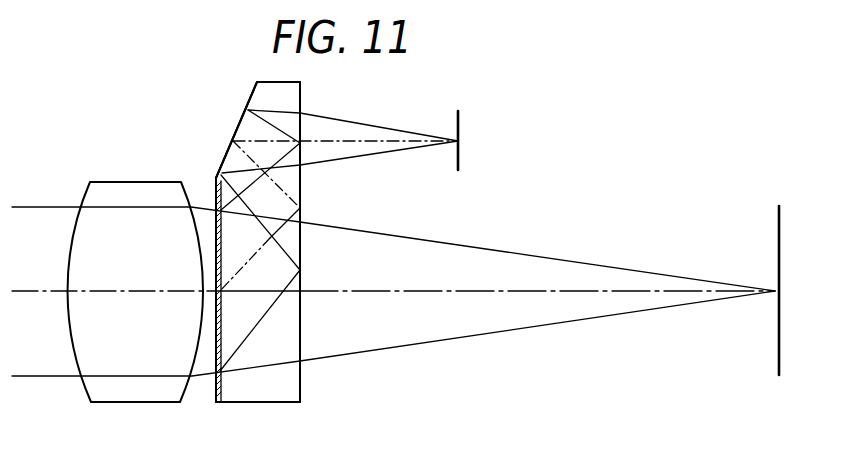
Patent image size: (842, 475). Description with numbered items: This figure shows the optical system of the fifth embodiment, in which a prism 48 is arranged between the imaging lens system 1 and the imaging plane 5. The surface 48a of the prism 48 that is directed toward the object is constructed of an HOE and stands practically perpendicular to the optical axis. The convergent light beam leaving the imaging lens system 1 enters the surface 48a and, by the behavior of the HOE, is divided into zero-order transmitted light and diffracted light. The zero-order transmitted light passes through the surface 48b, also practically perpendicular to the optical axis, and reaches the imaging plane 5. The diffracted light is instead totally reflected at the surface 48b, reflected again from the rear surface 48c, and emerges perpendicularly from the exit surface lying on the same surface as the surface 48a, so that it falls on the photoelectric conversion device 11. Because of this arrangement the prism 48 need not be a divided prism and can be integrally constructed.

The imaging lens system 1 is at (112, 181).
The imaging plane 5 is at (780, 224).
The photoelectric conversion device 11 is at (459, 122).
The prism 48 is at (293, 383).
The surface directed toward the object 48a is at (216, 356).
The surface practically perpendicular to the optical axis 48b is at (302, 342).
The rear surface 48c is at (243, 118).